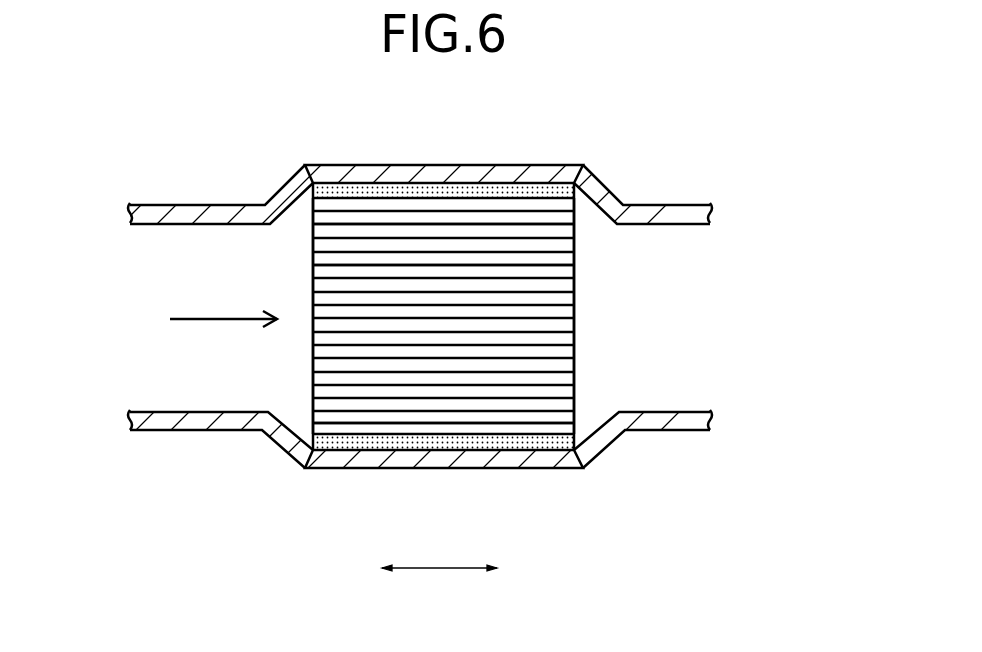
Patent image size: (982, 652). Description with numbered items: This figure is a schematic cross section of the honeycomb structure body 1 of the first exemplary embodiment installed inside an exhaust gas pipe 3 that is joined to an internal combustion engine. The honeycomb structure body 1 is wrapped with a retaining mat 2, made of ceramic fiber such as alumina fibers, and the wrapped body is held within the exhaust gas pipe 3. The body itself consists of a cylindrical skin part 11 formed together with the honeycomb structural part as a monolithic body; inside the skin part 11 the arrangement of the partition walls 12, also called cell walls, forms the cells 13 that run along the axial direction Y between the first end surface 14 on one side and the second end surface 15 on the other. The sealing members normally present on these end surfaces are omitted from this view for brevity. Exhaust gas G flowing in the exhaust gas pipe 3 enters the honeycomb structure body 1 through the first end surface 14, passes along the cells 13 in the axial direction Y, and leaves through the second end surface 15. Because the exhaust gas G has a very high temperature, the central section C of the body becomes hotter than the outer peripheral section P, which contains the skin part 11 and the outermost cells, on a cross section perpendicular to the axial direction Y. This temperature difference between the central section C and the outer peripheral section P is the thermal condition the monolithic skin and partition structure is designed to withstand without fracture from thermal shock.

The honeycomb structure body 1 is at (575, 218).
The retaining mat 2 is at (494, 186).
The exhaust gas pipe 3 is at (198, 422).
The skin part 11 is at (440, 182).
The partition walls 12 is at (427, 387).
The cells 13 is at (534, 264).
The first end surface 14 is at (312, 273).
The second end surface 15 is at (575, 317).
The outer peripheral section P is at (394, 220).
The central section C is at (465, 312).
The exhaust gas G is at (207, 320).
The axial direction Y is at (439, 587).